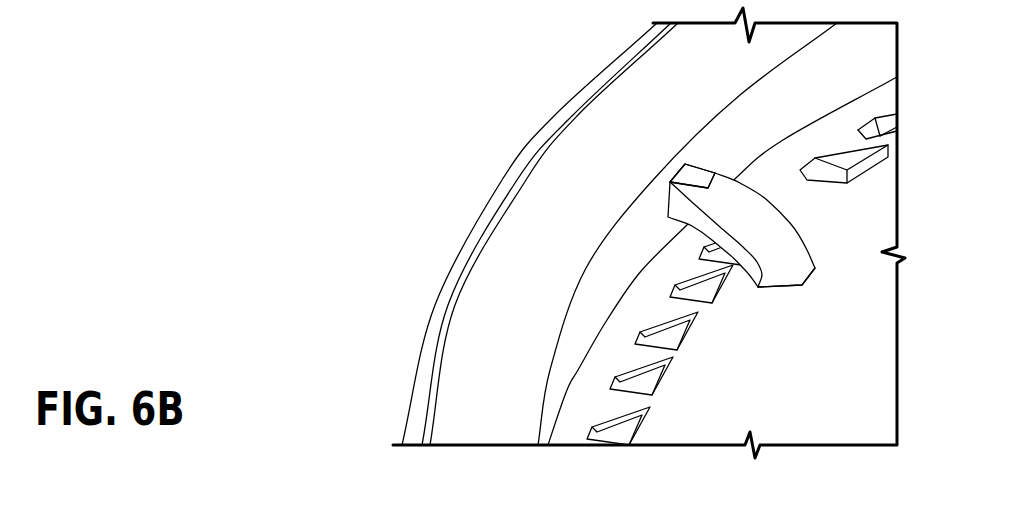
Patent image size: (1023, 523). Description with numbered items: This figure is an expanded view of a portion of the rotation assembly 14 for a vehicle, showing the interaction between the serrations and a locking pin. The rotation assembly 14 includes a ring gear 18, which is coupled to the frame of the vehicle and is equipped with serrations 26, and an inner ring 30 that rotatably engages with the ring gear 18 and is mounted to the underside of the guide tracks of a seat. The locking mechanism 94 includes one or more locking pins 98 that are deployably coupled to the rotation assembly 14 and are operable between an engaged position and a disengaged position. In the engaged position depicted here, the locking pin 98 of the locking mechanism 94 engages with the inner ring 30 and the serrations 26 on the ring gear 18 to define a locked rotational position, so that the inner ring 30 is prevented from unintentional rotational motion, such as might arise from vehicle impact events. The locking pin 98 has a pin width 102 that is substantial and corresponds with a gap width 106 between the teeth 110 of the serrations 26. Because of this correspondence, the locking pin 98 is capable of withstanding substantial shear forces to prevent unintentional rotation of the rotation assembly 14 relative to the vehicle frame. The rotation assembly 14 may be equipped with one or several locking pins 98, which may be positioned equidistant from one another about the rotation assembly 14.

The rotation assembly 14 is at (522, 119).
The ring gear 18 is at (479, 212).
The inner ring 30 is at (852, 63).
The serrations 26 is at (856, 151).
The gap width 106 is at (834, 184).
The locking pin 98 is at (800, 262).
The locking mechanism 94 is at (807, 292).
The pin width 102 is at (708, 185).
The teeth 110 is at (620, 410).